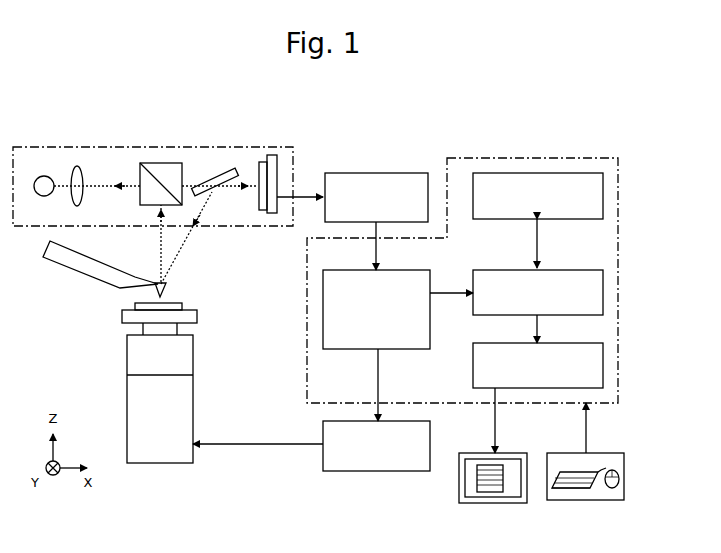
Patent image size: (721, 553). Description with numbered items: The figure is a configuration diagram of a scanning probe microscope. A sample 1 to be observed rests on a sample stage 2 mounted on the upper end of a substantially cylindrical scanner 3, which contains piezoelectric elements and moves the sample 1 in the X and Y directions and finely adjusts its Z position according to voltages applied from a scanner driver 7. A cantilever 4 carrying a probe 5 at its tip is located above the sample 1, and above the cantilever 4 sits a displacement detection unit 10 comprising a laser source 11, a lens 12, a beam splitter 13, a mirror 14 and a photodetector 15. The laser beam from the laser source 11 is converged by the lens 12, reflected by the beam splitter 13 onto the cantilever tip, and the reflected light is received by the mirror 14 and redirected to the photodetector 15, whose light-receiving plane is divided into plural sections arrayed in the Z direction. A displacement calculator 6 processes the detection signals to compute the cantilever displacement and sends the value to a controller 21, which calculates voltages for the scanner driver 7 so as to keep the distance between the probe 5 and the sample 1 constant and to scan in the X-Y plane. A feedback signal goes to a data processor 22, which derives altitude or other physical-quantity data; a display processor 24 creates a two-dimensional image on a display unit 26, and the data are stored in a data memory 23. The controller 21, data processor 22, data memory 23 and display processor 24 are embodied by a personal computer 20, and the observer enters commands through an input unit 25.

The sample 1 is at (133, 305).
The sample stage 2 is at (120, 321).
The scanner 3 is at (122, 402).
The cantilever 4 is at (151, 284).
The probe 5 is at (167, 291).
The displacement calculator 6 is at (400, 172).
The scanner driver 7 is at (342, 473).
The displacement detection unit 10 is at (108, 146).
The laser source 11 is at (42, 175).
The lens 12 is at (76, 166).
The beam splitter 13 is at (152, 163).
The mirror 14 is at (222, 172).
The photodetector 15 is at (262, 160).
The personal computer 20 is at (620, 251).
The controller 21 is at (323, 290).
The data processor 22 is at (606, 291).
The data memory 23 is at (606, 193).
The display processor 24 is at (606, 360).
The input unit 25 is at (566, 502).
The display unit 26 is at (474, 506).